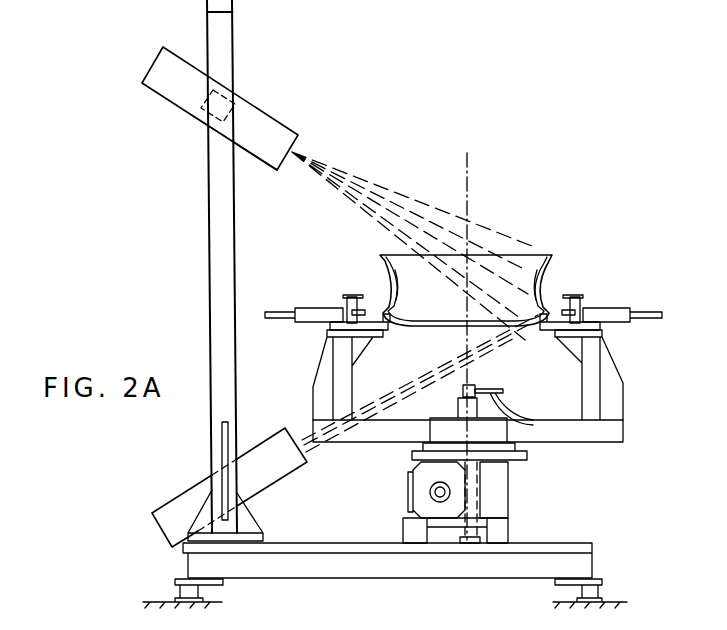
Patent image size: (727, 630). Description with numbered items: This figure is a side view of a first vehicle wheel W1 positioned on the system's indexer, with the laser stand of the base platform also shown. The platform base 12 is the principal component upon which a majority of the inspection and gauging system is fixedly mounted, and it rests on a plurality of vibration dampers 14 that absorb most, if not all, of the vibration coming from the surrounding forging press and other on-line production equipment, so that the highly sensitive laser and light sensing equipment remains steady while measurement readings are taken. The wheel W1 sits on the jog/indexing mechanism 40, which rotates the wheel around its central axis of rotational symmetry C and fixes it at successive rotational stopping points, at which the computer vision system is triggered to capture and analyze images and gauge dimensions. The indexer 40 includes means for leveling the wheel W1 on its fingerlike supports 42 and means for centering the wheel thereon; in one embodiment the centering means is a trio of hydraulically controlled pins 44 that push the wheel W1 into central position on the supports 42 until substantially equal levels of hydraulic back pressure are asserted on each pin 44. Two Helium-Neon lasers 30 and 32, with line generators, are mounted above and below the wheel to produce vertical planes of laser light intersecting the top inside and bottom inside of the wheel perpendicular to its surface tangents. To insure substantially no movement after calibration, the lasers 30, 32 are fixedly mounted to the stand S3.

The laser stand S3 is at (232, 38).
The Helium-Neon laser 30 is at (276, 115).
The Helium-Neon laser 32 is at (276, 483).
The central axis of rotational symmetry C is at (467, 334).
The wheel W1 is at (380, 258).
The hydraulically controlled pins 44 is at (350, 297).
The fingerlike supports 42 is at (385, 331).
The jog/indexing mechanism 40 is at (517, 462).
The platform base 12 is at (574, 545).
The vibration dampers 14 is at (603, 585).